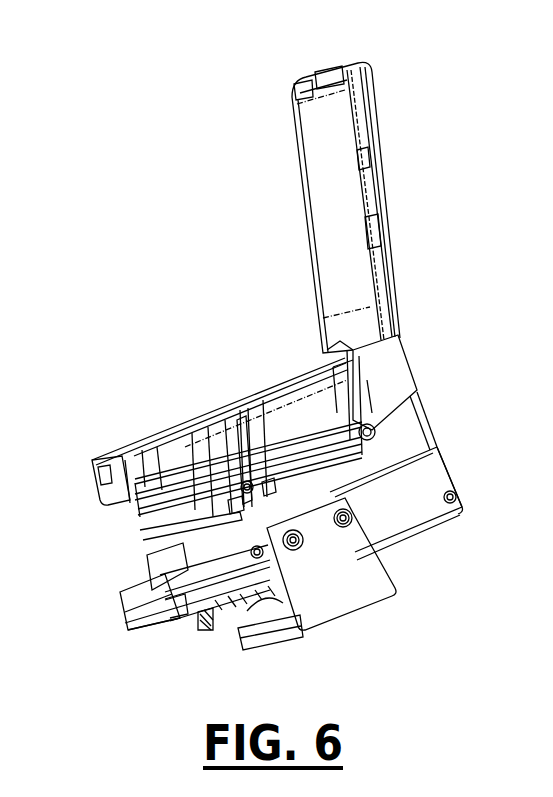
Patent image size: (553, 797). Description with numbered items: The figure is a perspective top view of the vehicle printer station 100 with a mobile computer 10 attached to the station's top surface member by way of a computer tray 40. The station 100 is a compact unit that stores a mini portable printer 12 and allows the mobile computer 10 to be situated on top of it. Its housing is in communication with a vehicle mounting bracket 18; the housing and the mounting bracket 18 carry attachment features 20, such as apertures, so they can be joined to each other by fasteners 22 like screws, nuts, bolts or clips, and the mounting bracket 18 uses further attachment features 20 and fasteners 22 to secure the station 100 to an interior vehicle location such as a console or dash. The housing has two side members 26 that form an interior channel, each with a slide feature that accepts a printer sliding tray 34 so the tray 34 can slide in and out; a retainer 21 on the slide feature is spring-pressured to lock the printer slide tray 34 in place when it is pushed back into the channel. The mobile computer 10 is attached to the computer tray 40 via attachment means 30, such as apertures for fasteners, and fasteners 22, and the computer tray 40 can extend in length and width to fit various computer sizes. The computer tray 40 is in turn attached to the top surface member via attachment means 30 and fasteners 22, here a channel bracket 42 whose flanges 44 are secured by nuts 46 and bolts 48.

The mobile computer 10 is at (343, 257).
The mini portable printer 12 is at (128, 597).
The vehicle mounting bracket 18 is at (343, 587).
The attachment features 20 is at (350, 532).
The retainer 21 is at (170, 617).
The fasteners 22 is at (367, 435).
The side members 26 is at (427, 476).
The attachment means 30 is at (243, 507).
The printer sliding tray 34 is at (142, 618).
The computer tray 40 is at (418, 417).
The channel bracket 42 is at (270, 490).
The flanges 44 is at (375, 465).
The nuts 46 is at (235, 516).
The bolts 48 is at (235, 505).
The vehicle printer station 100 is at (403, 505).